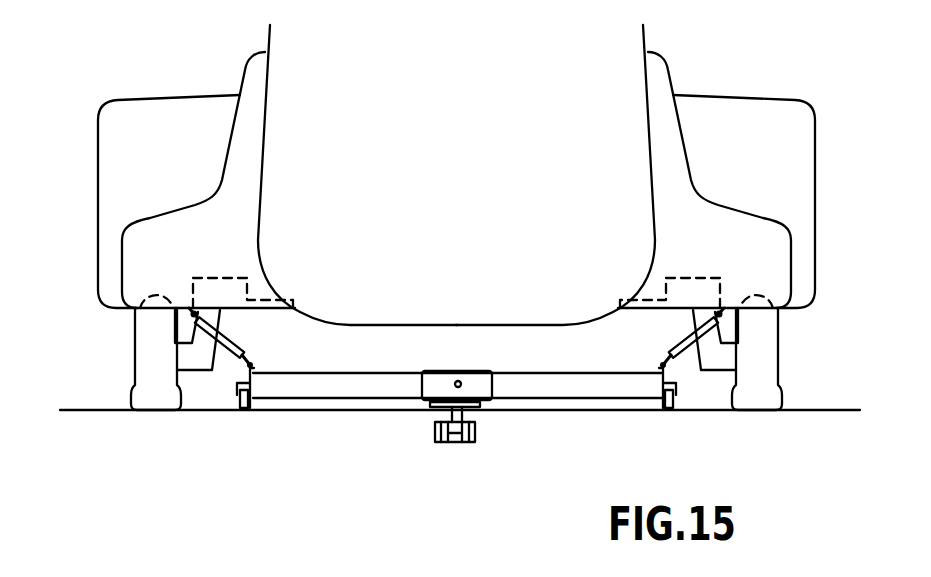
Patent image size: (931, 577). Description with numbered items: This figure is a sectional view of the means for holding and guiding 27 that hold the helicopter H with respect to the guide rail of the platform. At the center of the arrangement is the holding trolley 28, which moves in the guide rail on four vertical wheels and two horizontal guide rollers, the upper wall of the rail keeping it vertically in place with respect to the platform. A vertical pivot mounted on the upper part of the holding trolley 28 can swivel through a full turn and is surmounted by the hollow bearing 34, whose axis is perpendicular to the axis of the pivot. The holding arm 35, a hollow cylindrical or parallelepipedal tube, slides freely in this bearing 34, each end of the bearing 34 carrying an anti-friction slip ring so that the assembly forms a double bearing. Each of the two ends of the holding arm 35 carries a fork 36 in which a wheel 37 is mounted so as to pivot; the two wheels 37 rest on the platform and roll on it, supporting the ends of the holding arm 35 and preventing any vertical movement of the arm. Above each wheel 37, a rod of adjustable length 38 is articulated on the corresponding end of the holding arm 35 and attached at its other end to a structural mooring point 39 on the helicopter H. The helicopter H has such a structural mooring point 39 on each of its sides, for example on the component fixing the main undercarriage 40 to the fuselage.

The helicopter H is at (181, 93).
The means for holding and guiding 27 is at (347, 450).
The holding trolley 28 is at (475, 425).
The bearing 34 is at (428, 395).
The holding arm 35 is at (317, 388).
The fork 36 is at (237, 406).
The wheel 37 is at (243, 410).
The rod of adjustable length 38 is at (228, 338).
The structural mooring point 39 is at (190, 312).
The main undercarriage 40 is at (180, 355).